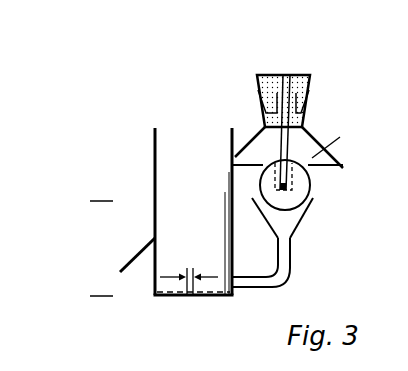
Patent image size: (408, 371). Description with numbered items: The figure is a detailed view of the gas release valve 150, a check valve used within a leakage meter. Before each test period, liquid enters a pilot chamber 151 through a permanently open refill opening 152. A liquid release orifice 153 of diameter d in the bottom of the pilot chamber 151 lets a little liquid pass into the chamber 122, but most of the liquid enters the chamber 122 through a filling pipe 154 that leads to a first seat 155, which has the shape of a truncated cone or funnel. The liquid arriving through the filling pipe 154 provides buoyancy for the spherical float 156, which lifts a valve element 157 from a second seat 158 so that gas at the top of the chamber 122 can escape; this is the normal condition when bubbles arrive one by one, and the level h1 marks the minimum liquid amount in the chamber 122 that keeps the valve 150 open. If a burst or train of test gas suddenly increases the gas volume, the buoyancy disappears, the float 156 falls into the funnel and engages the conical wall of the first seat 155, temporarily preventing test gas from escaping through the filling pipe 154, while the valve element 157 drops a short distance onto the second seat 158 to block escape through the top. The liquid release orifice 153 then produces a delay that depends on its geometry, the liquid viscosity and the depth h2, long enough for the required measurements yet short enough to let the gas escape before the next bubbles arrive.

The gas release valve 150 is at (74, 124).
The pilot chamber 151 is at (155, 182).
The refill opening 152 is at (197, 130).
The liquid release orifice 153 is at (190, 297).
The filling pipe 154 is at (292, 268).
The first seat 155 is at (290, 228).
The float 156 is at (305, 179).
The valve element 157 is at (297, 75).
The second seat 158 is at (306, 96).
The chamber 122 is at (138, 258).